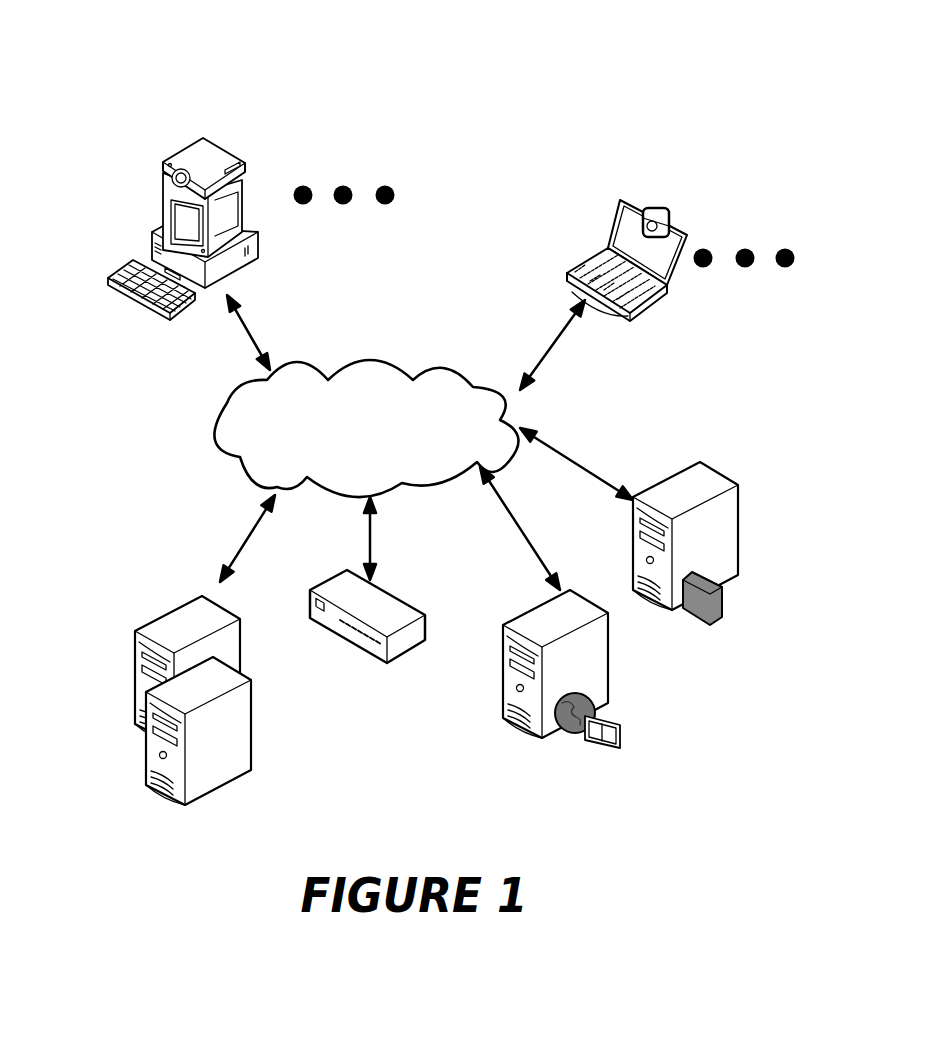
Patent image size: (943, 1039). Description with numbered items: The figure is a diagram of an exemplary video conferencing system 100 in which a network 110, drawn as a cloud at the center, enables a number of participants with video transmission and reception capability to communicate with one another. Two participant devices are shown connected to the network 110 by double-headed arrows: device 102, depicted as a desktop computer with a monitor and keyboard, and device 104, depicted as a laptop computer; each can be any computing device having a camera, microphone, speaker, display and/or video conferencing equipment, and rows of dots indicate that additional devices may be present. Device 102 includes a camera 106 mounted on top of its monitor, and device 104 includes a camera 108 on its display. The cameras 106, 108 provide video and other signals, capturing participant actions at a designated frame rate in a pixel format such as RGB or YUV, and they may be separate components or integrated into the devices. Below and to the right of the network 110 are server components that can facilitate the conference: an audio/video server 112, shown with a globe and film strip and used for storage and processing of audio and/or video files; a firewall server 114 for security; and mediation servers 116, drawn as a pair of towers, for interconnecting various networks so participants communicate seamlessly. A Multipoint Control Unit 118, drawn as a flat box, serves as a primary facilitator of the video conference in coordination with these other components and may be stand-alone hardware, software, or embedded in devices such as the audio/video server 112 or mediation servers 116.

The video conferencing system 100 is at (425, 92).
The participant device 102 is at (162, 187).
The participant device 104 is at (582, 265).
The camera 106 is at (208, 158).
The camera 108 is at (668, 217).
The network 110 is at (217, 428).
The audio/video server 112 is at (542, 738).
The firewall server 114 is at (740, 577).
The mediation servers 116 is at (135, 637).
The Multipoint Control Unit (MCU) 118 is at (382, 643).